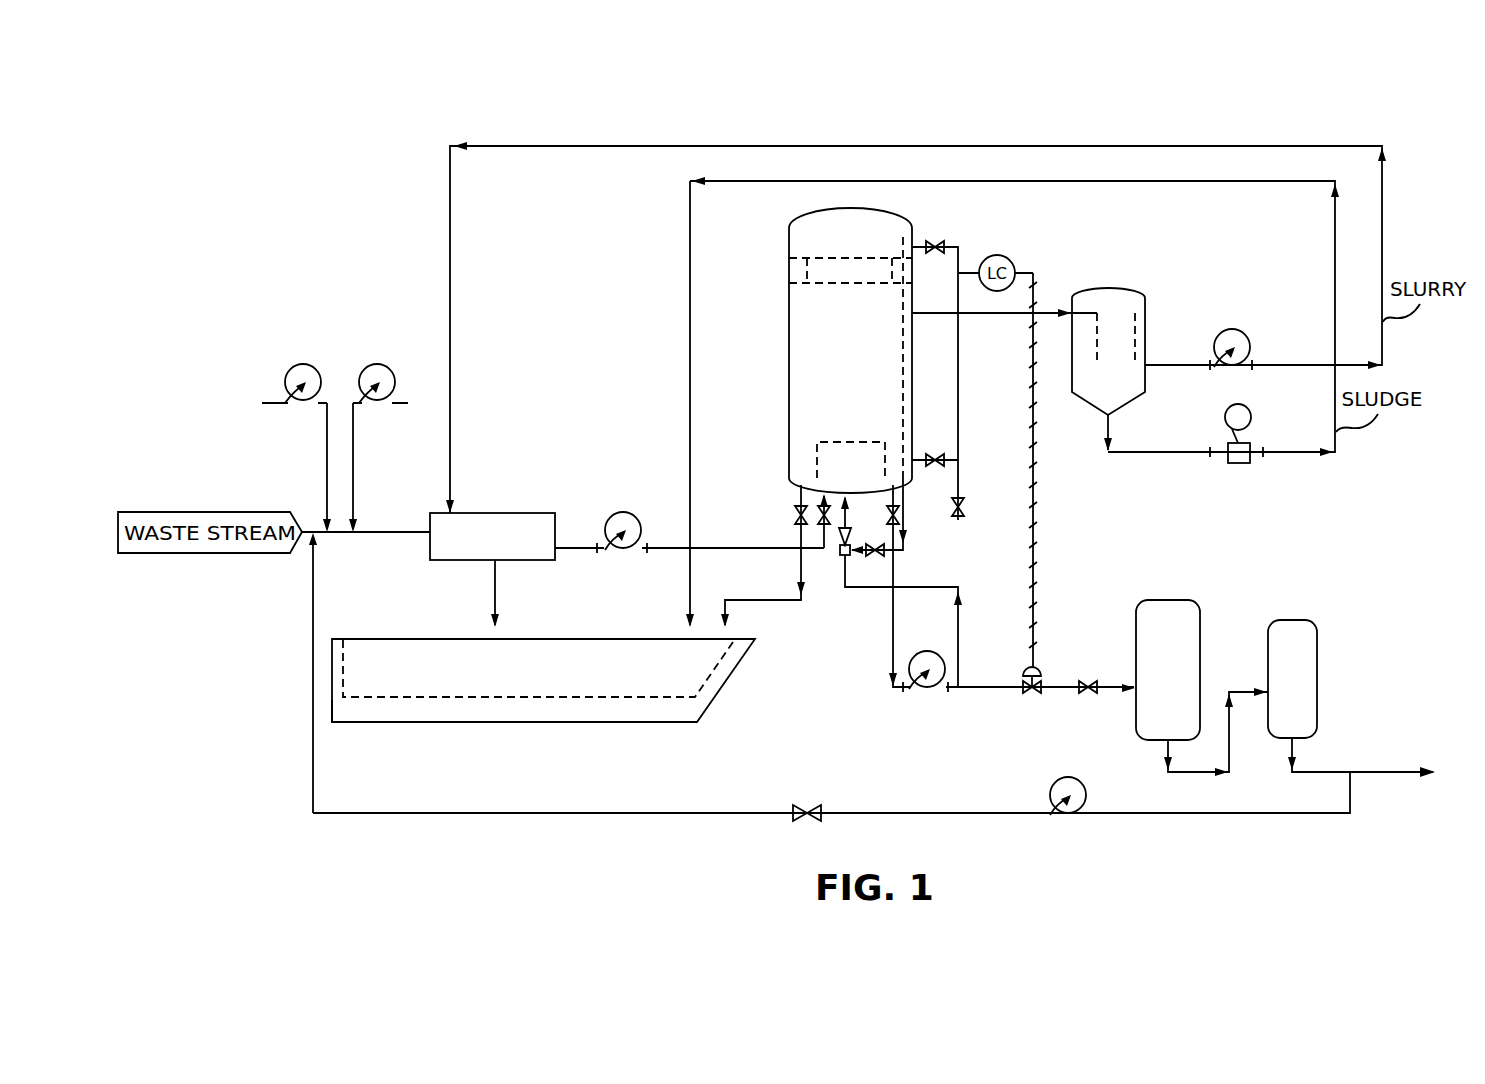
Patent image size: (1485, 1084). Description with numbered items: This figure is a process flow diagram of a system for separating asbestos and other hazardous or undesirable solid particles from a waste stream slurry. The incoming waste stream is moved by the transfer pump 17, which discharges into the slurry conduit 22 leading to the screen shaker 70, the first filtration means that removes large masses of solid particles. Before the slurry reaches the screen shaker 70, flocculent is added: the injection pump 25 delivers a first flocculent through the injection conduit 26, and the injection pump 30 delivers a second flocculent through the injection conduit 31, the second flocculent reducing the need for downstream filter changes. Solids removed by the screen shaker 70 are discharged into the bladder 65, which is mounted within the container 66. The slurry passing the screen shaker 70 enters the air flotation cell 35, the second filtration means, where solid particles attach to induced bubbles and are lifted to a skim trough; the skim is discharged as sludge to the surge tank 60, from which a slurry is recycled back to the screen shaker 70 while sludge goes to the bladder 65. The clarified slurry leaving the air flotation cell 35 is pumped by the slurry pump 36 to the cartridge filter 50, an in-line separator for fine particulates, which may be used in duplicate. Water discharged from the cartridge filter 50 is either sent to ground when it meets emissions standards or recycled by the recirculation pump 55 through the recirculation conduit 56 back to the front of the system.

The transfer pump 17 is at (630, 512).
The slurry conduit 22 is at (495, 585).
The injection pump 25 is at (292, 362).
The injection conduit 26 is at (326, 456).
The injection pump 30 is at (372, 362).
The injection conduit 31 is at (354, 456).
The air flotation cell 35 is at (800, 367).
The slurry pump 36 is at (933, 689).
The cartridge filter 50 is at (1168, 600).
The recirculation pump 55 is at (1068, 777).
The recirculation conduit 56 is at (858, 811).
The surge tank 60 is at (1125, 300).
The bladder 65 is at (495, 674).
The container 66 is at (361, 714).
The screen shaker 70 is at (478, 551).